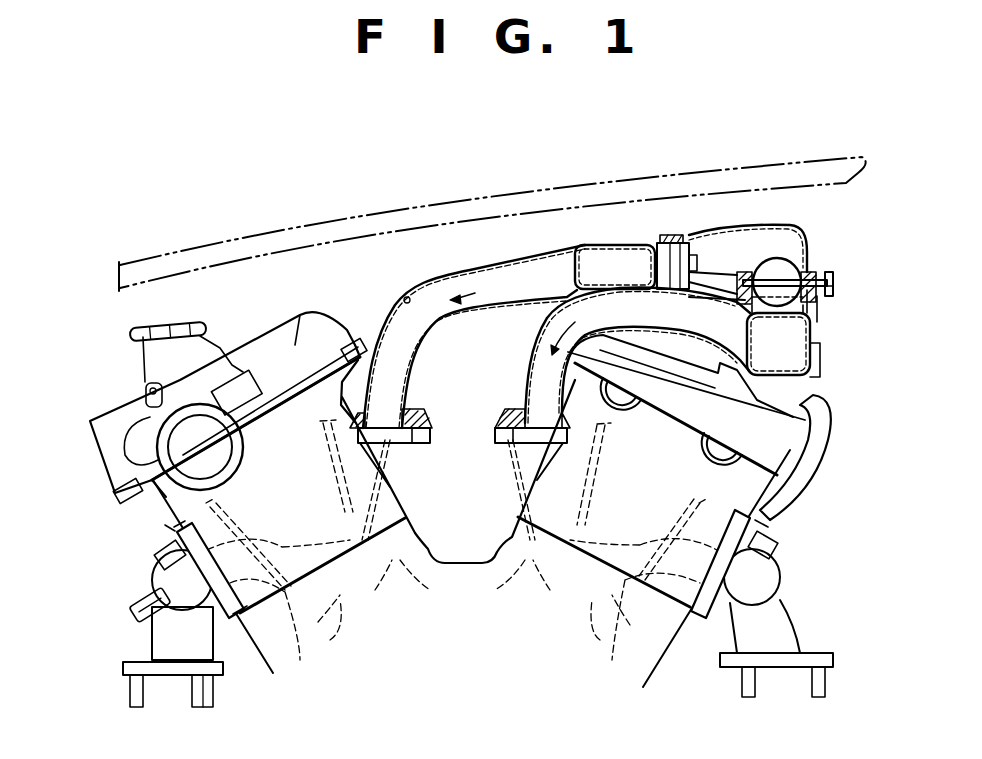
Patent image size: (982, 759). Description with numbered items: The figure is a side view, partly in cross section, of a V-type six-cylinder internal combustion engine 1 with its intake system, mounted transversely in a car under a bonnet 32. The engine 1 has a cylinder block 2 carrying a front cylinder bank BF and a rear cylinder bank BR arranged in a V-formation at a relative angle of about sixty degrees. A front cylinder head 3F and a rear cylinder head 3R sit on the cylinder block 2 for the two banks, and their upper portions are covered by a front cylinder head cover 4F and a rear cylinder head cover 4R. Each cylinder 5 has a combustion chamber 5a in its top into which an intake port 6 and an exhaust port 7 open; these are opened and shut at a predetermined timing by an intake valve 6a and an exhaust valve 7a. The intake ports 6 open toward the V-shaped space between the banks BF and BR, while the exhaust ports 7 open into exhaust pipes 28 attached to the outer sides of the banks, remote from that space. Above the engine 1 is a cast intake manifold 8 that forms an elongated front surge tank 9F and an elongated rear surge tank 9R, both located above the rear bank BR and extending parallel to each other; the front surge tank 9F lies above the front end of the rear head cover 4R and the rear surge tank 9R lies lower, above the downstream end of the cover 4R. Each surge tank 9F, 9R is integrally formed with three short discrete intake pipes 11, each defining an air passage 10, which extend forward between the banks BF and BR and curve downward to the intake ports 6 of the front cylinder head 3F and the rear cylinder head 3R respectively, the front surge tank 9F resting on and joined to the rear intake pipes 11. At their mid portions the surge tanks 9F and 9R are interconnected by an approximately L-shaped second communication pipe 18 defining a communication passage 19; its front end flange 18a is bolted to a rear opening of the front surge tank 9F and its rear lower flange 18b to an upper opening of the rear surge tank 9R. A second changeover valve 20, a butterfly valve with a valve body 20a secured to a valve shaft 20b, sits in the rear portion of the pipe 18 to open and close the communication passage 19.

The V-type internal combustion engine 1 is at (95, 524).
The cylinder block 2 is at (272, 675).
The front cylinder head 3F is at (170, 507).
The rear cylinder head 3R is at (768, 493).
The front cylinder head cover 4F is at (272, 325).
The rear cylinder head cover 4R is at (793, 407).
The cylinder 5 is at (307, 650).
The combustion chamber 5a is at (386, 570).
The intake port 6 is at (343, 530).
The intake valve 6a is at (400, 565).
The exhaust port 7 is at (272, 547).
The exhaust valve 7a is at (327, 626).
The intake manifold 8 is at (533, 255).
The front surge tank 9F is at (615, 240).
The rear surge tank 9R is at (810, 340).
The air passage 10 is at (405, 298).
The discrete intake pipe 11 is at (443, 323).
The second communication pipe 18 is at (750, 218).
The front end flange 18a is at (677, 235).
The rear lower flange 18b is at (820, 300).
The communication passage 19 is at (808, 262).
The second changeover valve 20 is at (778, 255).
The valve body 20a is at (763, 259).
The valve shaft 20b is at (821, 283).
The exhaust pipe 28 is at (150, 640).
The bonnet 32 is at (402, 208).
The front cylinder bank BF is at (163, 530).
The rear cylinder bank BR is at (778, 523).